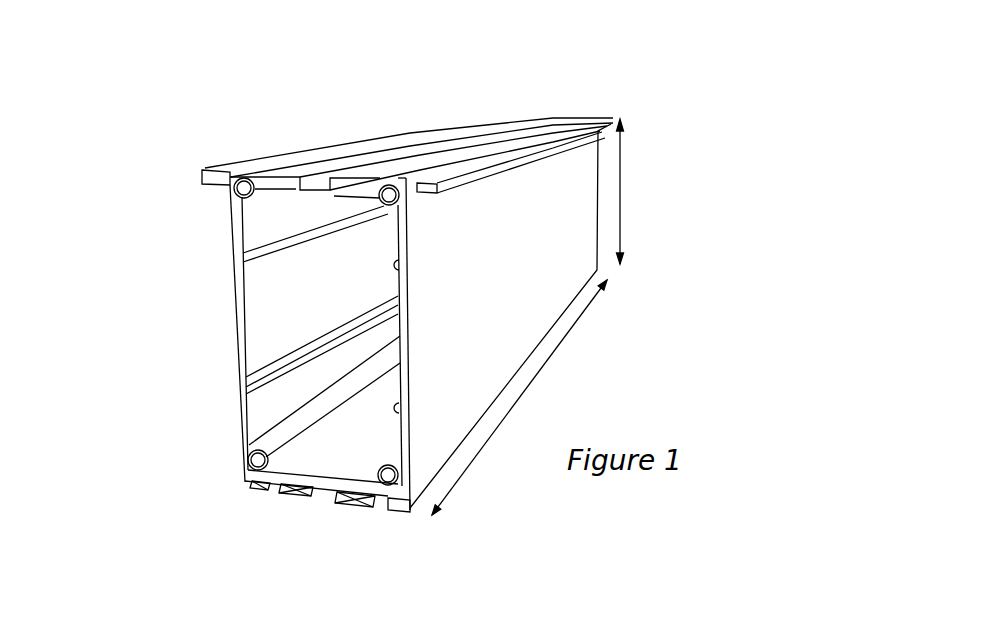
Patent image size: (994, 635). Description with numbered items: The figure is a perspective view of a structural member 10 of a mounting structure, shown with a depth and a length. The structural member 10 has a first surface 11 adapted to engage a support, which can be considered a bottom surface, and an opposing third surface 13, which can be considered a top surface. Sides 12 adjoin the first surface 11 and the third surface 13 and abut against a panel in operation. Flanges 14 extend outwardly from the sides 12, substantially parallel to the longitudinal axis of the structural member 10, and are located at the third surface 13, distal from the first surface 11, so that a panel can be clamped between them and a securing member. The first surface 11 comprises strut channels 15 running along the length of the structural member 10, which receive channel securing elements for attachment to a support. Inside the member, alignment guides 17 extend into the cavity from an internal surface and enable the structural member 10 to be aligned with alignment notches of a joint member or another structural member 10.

The structural member 10 is at (715, 143).
The first surface 11 is at (368, 523).
The sides 12 is at (223, 243).
The third surface 13 is at (393, 129).
The flanges 14 is at (208, 167).
The strut channels 15 is at (330, 489).
The alignment guides 17 is at (397, 265).